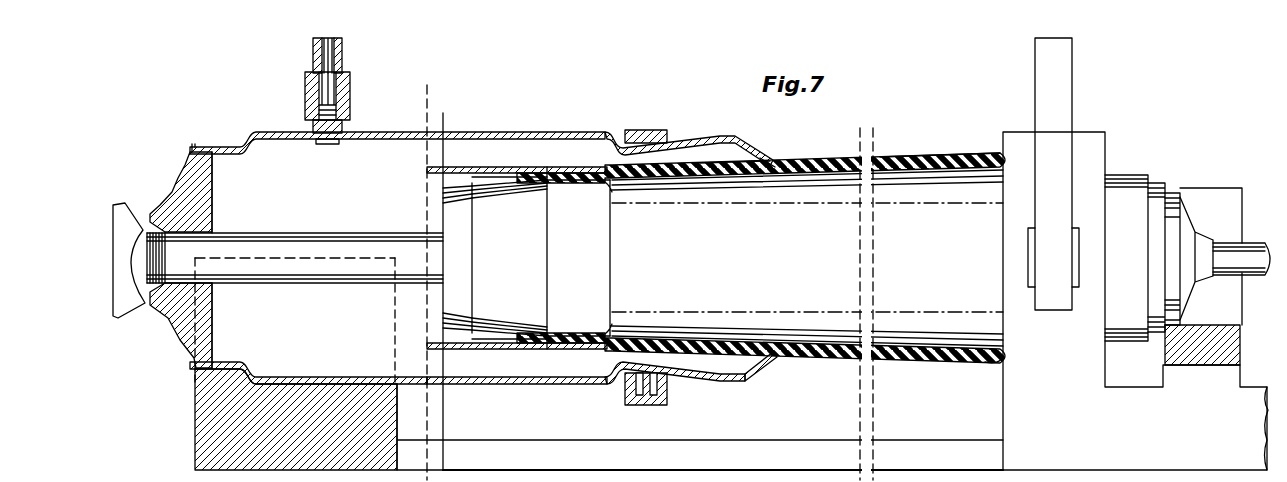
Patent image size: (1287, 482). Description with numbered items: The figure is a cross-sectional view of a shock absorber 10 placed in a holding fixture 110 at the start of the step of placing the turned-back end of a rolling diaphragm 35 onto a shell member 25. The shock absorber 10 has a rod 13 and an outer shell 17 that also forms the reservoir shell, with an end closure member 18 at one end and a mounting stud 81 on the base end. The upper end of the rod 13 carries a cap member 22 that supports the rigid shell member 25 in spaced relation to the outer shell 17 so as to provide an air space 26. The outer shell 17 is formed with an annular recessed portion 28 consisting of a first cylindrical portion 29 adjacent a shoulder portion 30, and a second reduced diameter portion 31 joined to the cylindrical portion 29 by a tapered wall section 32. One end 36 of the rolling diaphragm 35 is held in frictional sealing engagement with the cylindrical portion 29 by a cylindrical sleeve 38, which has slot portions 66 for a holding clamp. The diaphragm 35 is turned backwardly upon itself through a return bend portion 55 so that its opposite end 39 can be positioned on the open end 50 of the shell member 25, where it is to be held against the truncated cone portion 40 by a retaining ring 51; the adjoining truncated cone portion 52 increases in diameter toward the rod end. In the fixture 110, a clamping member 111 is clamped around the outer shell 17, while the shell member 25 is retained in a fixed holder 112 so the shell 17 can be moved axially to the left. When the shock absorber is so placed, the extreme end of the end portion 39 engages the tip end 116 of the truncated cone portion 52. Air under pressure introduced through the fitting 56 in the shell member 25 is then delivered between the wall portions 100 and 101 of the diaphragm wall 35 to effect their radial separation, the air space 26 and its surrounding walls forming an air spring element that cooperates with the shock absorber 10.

The shock absorber 10 is at (1141, 174).
The rod 13 is at (233, 250).
The outer shell 17 is at (913, 310).
The end closure member 18 is at (1155, 195).
The cap member 22 is at (180, 333).
The shell member 25 is at (265, 383).
The air space 26 is at (467, 370).
The annular recessed portion 28 is at (440, 177).
The first cylindrical portion 29 is at (568, 258).
The shoulder portion 30 is at (620, 187).
The second reduced diameter portion 31 is at (452, 210).
The tapered wall section 32 is at (490, 185).
The rolling diaphragm 35 is at (717, 173).
The diaphragm end 36 is at (503, 177).
The cylindrical sleeve 38 is at (468, 168).
The opposite diaphragm end 39 is at (777, 360).
The truncated cone portion 40 is at (690, 377).
The open end 50 is at (767, 158).
The retaining ring 51 is at (643, 131).
The truncated cone portion 52 is at (740, 148).
The return bend portion 55 is at (998, 358).
The fitting 56 is at (348, 86).
The slot portions 66 is at (560, 353).
The mounting stud 81 is at (1247, 262).
The diaphragm wall portion 100 is at (895, 158).
The diaphragm wall portion 101 is at (912, 170).
The holding fixture 110 is at (545, 452).
The clamping member 111 is at (1017, 145).
The fixed holder 112 is at (317, 403).
The tip end 116 is at (772, 157).